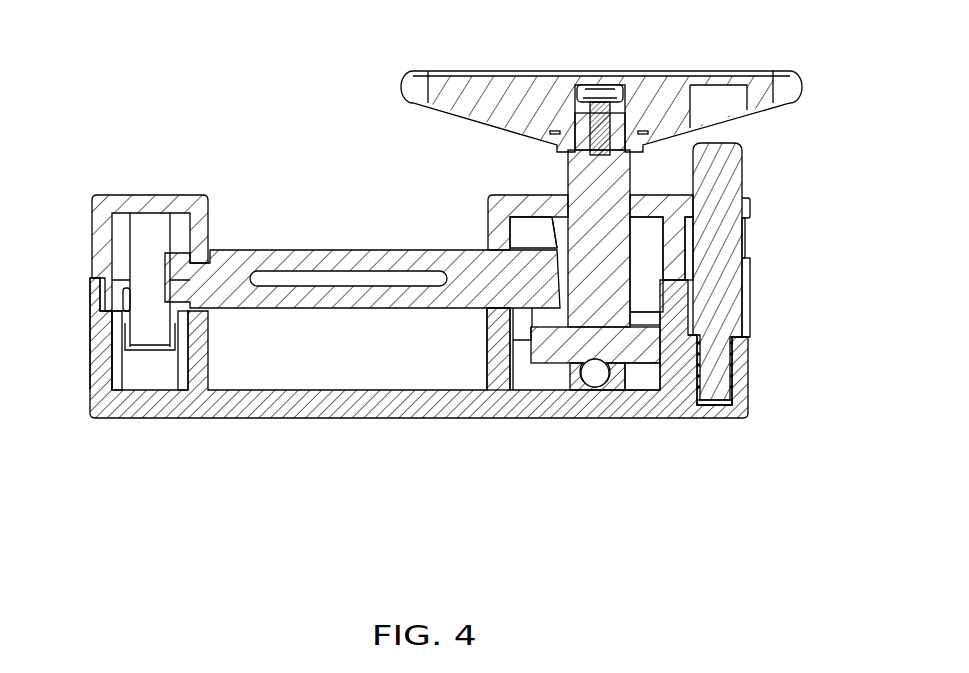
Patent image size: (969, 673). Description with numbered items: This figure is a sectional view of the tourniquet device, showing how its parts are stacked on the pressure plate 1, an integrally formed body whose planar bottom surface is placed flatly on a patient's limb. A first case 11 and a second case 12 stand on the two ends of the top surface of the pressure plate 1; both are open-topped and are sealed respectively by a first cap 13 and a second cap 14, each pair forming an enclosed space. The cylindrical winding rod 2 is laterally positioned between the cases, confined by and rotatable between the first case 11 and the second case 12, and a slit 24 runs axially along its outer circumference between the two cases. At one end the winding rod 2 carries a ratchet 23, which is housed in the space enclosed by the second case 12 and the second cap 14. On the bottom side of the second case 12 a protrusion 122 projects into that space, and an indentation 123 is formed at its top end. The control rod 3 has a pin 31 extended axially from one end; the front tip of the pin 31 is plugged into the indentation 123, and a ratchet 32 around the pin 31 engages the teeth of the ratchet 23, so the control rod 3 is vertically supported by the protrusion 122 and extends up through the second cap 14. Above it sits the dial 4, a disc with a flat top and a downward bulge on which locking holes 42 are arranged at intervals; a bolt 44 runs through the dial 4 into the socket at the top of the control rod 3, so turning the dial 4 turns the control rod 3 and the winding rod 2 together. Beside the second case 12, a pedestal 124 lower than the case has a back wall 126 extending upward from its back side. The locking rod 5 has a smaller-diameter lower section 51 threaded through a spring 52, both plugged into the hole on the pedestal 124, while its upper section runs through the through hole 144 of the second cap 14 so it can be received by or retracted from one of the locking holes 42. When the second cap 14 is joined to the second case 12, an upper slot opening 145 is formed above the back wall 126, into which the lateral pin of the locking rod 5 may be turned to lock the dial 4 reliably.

The pressure plate 1 is at (302, 398).
The winding rod 2 is at (362, 254).
The control rod 3 is at (565, 251).
The dial 4 is at (601, 80).
The locking rod 5 is at (727, 170).
The first case 11 is at (97, 373).
The second case 12 is at (493, 357).
The first cap 13 is at (97, 252).
The second cap 14 is at (492, 193).
The ratchet 23 is at (530, 225).
The slit 24 is at (303, 280).
The pin 31 is at (593, 383).
The ratchet 32 is at (552, 353).
The locking holes 42 is at (705, 97).
The bolt 44 is at (598, 95).
The lower section 51 is at (742, 343).
The spring 52 is at (733, 377).
The protrusion 122 is at (618, 387).
The indentation 123 is at (592, 393).
The pedestal 124 is at (740, 400).
The back wall 126 is at (747, 293).
The through hole 144 is at (745, 208).
The upper slot opening 145 is at (743, 247).